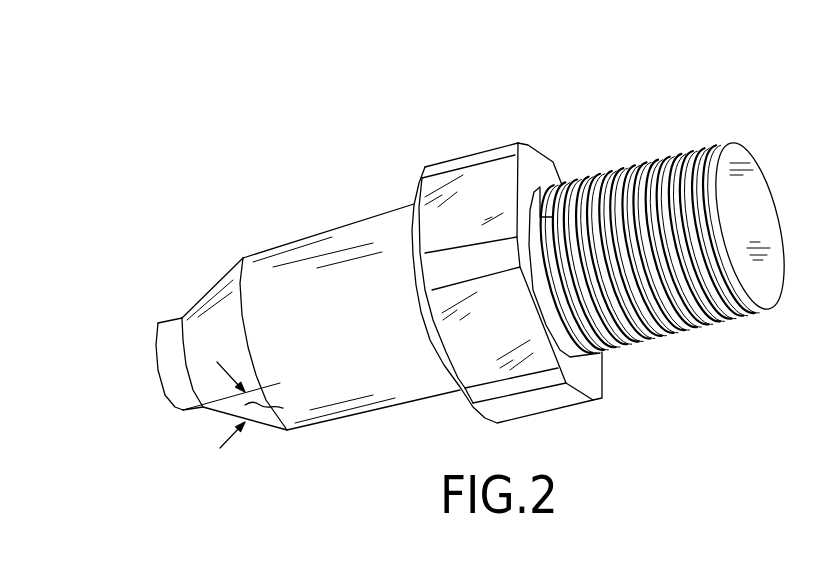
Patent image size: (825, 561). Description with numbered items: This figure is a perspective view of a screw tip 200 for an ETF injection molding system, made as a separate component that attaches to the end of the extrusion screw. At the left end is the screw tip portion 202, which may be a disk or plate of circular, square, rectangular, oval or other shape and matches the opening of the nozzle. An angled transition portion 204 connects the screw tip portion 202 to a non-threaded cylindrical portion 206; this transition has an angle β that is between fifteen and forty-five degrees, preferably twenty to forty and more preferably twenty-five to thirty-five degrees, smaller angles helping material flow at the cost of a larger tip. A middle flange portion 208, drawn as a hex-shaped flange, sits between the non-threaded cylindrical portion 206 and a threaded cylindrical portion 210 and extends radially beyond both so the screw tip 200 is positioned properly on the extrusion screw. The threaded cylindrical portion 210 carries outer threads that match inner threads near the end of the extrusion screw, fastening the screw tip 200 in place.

The screw tip 200 is at (218, 140).
The screw tip portion 202 is at (170, 324).
The angled transition portion 204 is at (215, 292).
The non-threaded cylindrical portion 206 is at (322, 250).
The middle flange portion 208 is at (482, 177).
The threaded cylindrical portion 210 is at (635, 185).